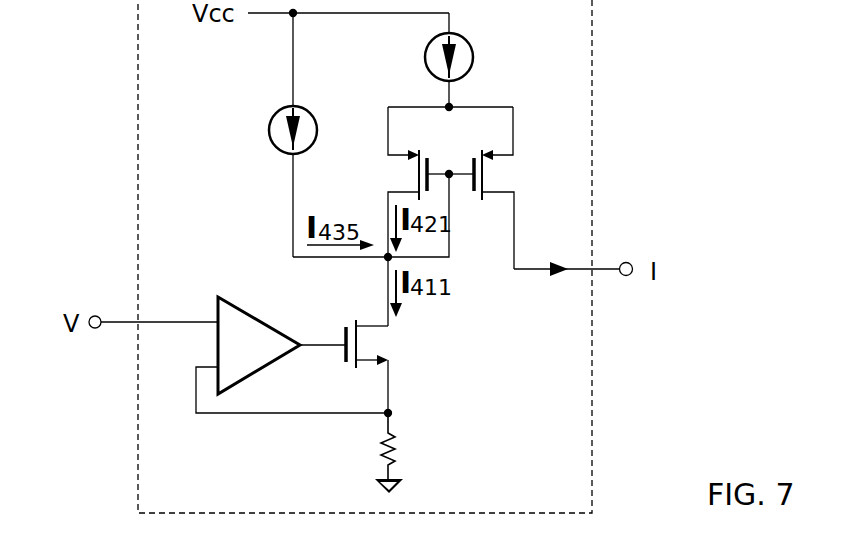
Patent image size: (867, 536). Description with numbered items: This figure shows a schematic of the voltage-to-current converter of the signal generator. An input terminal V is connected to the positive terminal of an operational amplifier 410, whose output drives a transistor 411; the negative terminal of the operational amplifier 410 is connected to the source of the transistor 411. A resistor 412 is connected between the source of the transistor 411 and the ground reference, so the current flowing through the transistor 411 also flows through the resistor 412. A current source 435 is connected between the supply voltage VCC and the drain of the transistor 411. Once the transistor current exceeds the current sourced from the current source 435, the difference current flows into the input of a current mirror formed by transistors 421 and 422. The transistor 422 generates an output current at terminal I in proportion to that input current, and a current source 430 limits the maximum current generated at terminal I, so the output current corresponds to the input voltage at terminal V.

The operational amplifier 410 is at (252, 312).
The transistor 411 is at (393, 340).
The resistor 412 is at (402, 448).
The transistor 421 is at (385, 175).
The transistor 422 is at (520, 178).
The current source 430 is at (477, 62).
The current source 435 is at (265, 131).